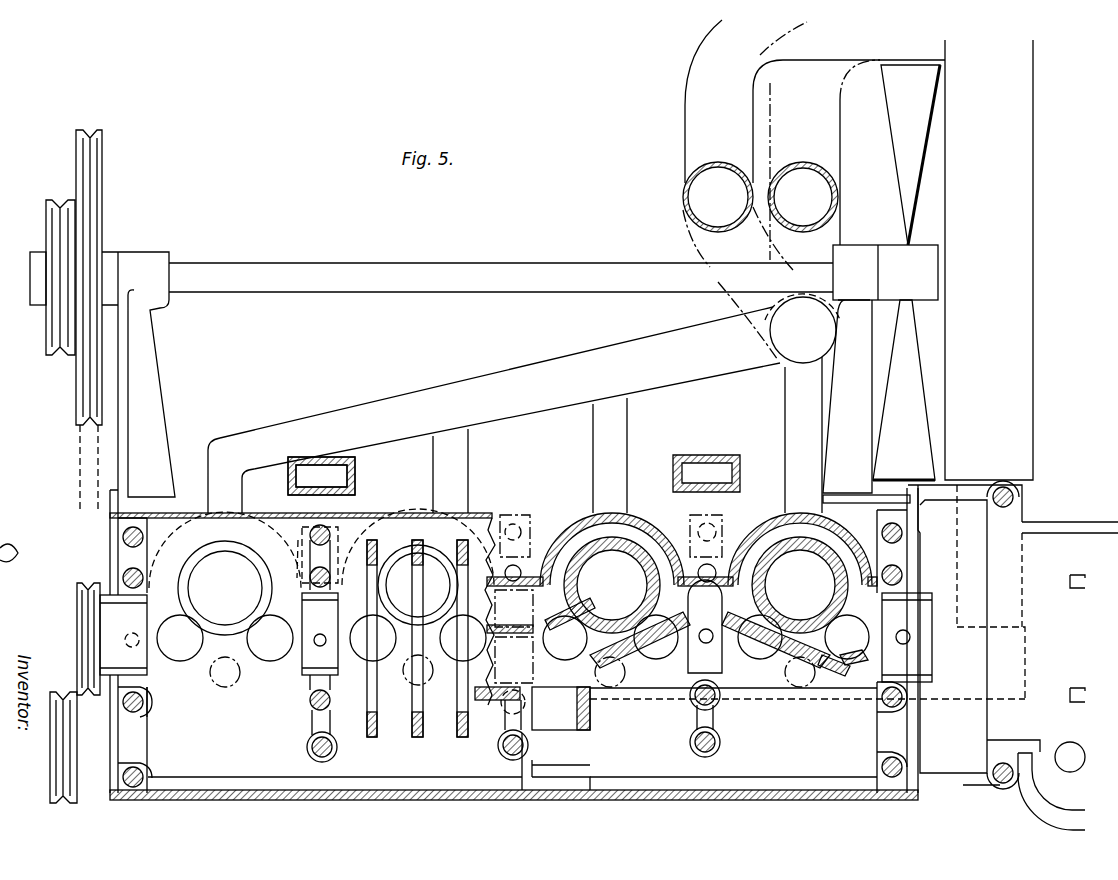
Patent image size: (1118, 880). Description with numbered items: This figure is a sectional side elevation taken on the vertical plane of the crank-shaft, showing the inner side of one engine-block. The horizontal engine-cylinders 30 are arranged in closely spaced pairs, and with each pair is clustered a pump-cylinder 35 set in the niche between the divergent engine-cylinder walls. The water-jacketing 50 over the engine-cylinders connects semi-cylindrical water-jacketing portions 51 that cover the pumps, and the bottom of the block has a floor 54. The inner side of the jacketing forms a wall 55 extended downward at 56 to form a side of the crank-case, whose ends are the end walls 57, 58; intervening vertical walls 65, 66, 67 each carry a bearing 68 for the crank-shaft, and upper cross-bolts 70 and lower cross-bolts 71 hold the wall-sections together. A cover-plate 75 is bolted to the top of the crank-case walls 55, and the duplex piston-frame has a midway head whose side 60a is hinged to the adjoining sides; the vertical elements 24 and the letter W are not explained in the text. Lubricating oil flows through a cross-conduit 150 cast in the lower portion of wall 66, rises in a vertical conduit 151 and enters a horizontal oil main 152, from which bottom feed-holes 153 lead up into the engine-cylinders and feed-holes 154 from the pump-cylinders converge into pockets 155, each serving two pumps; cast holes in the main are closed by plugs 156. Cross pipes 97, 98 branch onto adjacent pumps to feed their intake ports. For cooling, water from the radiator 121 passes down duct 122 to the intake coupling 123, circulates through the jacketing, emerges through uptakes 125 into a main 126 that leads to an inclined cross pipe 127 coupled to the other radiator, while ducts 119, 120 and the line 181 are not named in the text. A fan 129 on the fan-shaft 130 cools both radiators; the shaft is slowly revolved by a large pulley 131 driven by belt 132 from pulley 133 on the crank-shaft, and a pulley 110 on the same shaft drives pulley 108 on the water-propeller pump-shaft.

The large pulley 131 is at (103, 175).
The pulley 110 is at (46, 218).
The fan-shaft 130 is at (501, 277).
The belt 132 is at (79, 445).
The pulley 133 is at (77, 600).
The pulley 108 is at (77, 736).
The wall 55 is at (567, 644).
The end wall of crank-case 57 is at (116, 545).
The upper cross-bolts 70 is at (144, 537).
The lower cross-bolts 71 is at (144, 703).
The bearing 68 is at (148, 680).
The pump-cylinder 35 is at (262, 600).
The semi-cylindrical water-jacketing portions 51 is at (268, 530).
The water-jacketing 50 is at (584, 571).
The intervening vertical wall 65 is at (330, 553).
The engine-cylinder 30 is at (513, 649).
The plugs 156 is at (230, 688).
The cylinder block wall 24 is at (380, 750).
The side of midway head 60a is at (402, 527).
The water jacket W is at (702, 570).
The intervening vertical wall 66 is at (528, 560).
The cross-conduit 150 is at (520, 768).
The vertical conduit 151 is at (590, 712).
The pockets 155 is at (706, 622).
The intervening vertical wall 67 is at (716, 556).
The feed-holes 154 is at (710, 623).
The bottom feed-holes 153 is at (566, 668).
The horizontal oil main 152 is at (834, 672).
The floor 54 is at (774, 700).
The downward extension of wall 56 is at (817, 752).
The end wall of crank-case 58 is at (907, 731).
The duct 122 is at (1024, 572).
The intake coupling 123 is at (978, 700).
The supply line 181 is at (1043, 527).
The uptakes 125 is at (515, 435).
The main 126 is at (530, 379).
The cross pipe 97 is at (356, 468).
The cover-plate 75 is at (386, 512).
The cross pipe 98 is at (709, 456).
The air duct 119 is at (685, 103).
The inclined cross pipe 127 is at (840, 100).
The fan blade 120 is at (920, 65).
The fan 129 is at (879, 401).
The radiator 121 is at (989, 260).